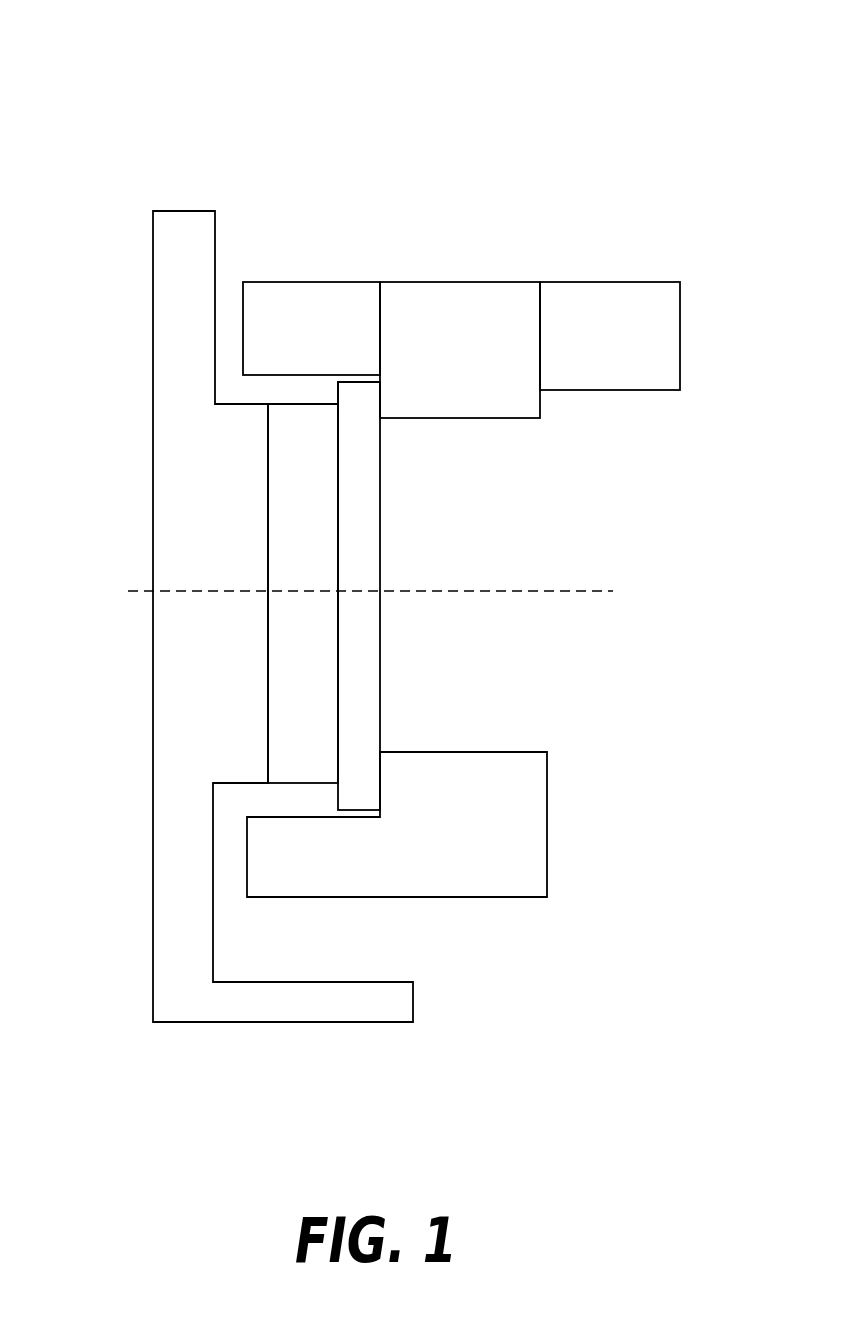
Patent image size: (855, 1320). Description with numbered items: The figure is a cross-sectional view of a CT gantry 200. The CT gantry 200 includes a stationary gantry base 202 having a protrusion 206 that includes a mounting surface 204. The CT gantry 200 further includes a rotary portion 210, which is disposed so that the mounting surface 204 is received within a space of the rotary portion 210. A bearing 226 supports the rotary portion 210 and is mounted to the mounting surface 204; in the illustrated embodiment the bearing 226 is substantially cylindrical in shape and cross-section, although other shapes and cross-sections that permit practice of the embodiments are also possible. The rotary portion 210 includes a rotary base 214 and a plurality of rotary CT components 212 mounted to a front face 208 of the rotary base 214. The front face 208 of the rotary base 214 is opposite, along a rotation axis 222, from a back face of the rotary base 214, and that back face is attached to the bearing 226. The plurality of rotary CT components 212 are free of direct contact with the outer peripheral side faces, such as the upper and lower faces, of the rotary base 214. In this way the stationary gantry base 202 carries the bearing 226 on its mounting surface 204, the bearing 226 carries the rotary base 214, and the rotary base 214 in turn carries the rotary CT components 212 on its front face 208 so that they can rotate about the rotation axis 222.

The CT gantry 200 is at (245, 50).
The stationary gantry base 202 is at (243, 1000).
The mounting surface 204 is at (255, 448).
The protrusion 206 is at (228, 643).
The front face 208 is at (390, 630).
The rotary portion 210 is at (463, 515).
The rotary CT components 212 is at (577, 328).
The rotary base 214 is at (360, 400).
The rotation axis 222 is at (607, 592).
The bearing 226 is at (305, 435).